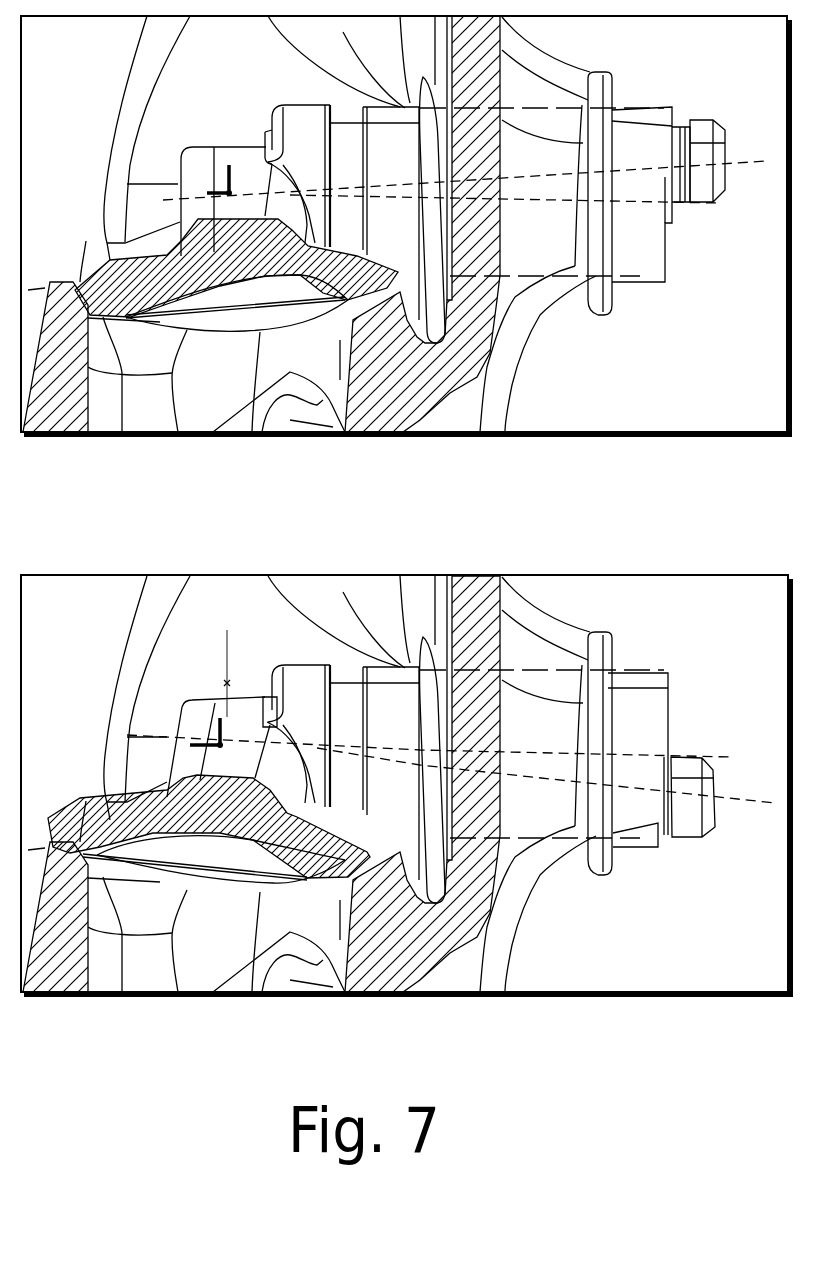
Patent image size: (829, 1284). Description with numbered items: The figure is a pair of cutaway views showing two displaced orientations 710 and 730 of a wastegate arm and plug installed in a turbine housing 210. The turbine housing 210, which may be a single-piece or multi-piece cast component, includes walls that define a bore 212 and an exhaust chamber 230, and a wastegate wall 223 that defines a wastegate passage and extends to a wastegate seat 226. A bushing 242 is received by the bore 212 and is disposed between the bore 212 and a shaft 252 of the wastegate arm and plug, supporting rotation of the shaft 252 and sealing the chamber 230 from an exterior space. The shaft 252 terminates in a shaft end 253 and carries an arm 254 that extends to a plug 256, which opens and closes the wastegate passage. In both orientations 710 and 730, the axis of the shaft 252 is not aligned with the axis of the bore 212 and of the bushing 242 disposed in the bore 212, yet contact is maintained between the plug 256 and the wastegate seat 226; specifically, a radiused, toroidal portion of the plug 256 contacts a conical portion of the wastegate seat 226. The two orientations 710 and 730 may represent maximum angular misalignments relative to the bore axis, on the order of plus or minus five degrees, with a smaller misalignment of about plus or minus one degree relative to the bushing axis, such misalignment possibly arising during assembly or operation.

The displaced orientation 710 is at (80, 55).
The displaced orientation 730 is at (79, 611).
The turbine housing 210 is at (405, 396).
The bore 212 is at (554, 280).
The wastegate wall 223 is at (232, 375).
The wastegate seat 226 is at (343, 322).
The exhaust chamber 230 is at (92, 153).
The bushing 242 is at (408, 161).
The shaft 252 is at (633, 108).
The shaft end 253 is at (725, 190).
The arm 254 is at (230, 143).
The plug 256 is at (363, 281).